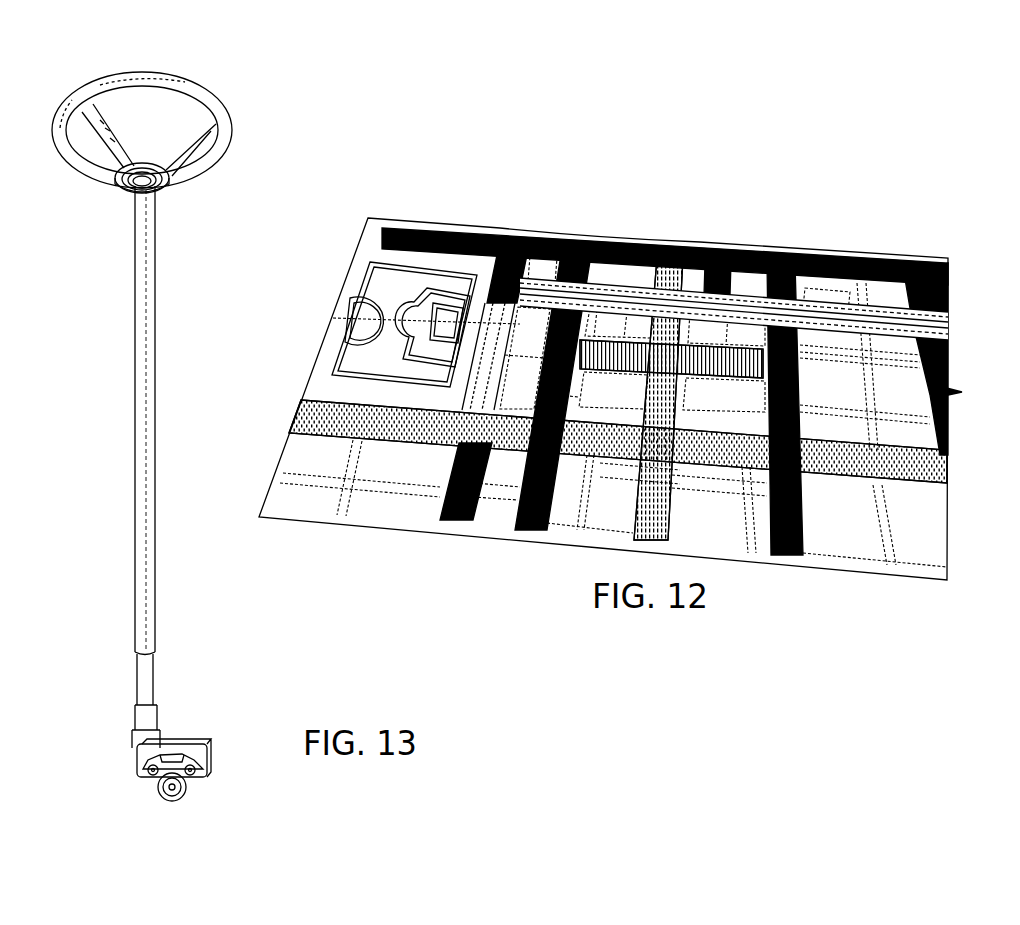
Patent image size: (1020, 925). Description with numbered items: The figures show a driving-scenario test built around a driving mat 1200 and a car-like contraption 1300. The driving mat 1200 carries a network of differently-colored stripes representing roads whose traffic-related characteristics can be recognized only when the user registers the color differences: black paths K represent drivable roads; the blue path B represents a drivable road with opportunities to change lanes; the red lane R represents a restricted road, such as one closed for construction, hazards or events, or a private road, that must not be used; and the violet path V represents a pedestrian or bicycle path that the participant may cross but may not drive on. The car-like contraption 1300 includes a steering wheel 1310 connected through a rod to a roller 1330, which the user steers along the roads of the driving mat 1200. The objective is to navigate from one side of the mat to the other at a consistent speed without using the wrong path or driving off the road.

In FIG. 13, the car-like contraption 1300 is at (152, 61).
In FIG. 13, the steering wheel 1310 is at (77, 163).
In FIG. 13, the roller 1330 is at (182, 803).
In FIG. 12, the driving mat 1200 is at (432, 194).
In FIG. 12, the red lane R is at (490, 352).
In FIG. 12, the violet path V is at (421, 403).
In FIG. 12, the blue path B is at (842, 318).
In FIG. 12, the black path K is at (803, 507).